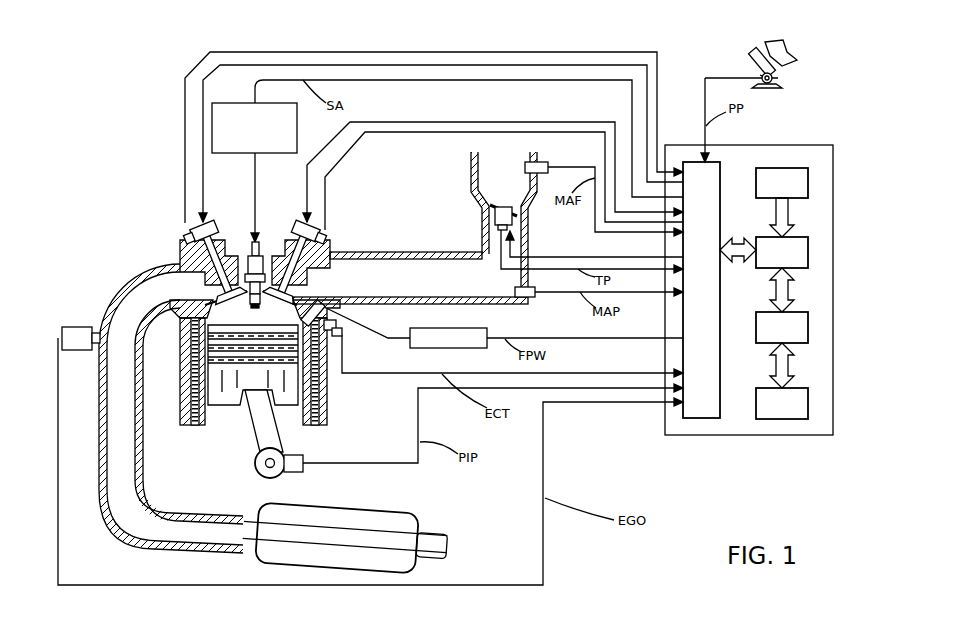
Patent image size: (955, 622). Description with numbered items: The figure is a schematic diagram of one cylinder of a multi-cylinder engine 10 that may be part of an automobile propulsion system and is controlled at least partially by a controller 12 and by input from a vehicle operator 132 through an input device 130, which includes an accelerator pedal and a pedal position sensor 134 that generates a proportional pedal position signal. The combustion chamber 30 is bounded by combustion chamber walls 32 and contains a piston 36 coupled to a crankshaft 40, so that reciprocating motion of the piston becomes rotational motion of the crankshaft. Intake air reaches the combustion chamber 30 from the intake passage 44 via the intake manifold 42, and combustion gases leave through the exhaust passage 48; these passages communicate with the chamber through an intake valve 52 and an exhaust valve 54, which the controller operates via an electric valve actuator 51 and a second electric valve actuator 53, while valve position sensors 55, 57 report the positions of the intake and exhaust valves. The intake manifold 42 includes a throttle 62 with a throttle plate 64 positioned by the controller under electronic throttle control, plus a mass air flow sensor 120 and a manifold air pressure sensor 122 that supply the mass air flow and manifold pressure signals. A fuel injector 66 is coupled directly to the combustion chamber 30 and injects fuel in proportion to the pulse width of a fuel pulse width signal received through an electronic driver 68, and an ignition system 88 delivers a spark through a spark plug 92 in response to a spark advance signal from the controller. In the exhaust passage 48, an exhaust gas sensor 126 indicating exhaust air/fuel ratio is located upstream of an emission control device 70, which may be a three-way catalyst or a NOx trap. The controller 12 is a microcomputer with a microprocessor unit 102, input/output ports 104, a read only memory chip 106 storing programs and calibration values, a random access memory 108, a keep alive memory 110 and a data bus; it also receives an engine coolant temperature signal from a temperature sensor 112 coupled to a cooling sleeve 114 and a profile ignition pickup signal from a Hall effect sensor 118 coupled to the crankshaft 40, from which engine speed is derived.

The engine 10 is at (128, 203).
The controller 12 is at (833, 146).
The combustion chamber 30 is at (195, 390).
The combustion chamber walls 32 is at (208, 428).
The piston 36 is at (242, 396).
The crankshaft 40 is at (258, 476).
The intake manifold 42 is at (495, 186).
The intake passage 44 is at (444, 288).
The exhaust passage 48 is at (144, 296).
The electric valve actuator 51 is at (293, 213).
The intake valve 52 is at (283, 290).
The electric valve actuator 53 is at (215, 214).
The exhaust valve 54 is at (217, 293).
The valve position sensor 55 is at (319, 234).
The valve position sensor 57 is at (193, 226).
The throttle 62 is at (524, 213).
The throttle plate 64 is at (490, 209).
The fuel injector 66 is at (337, 323).
The electronic driver 68 is at (415, 349).
The emission control device 70 is at (387, 512).
The ignition system 88 is at (222, 103).
The spark plug 92 is at (259, 246).
The microprocessor unit 102 is at (808, 250).
The input/output ports 104 is at (722, 165).
The read only memory chip 106 is at (808, 181).
The random access memory 108 is at (808, 325).
The keep alive memory 110 is at (808, 400).
The temperature sensor 112 is at (340, 338).
The cooling sleeve 114 is at (317, 385).
The Hall effect sensor 118 is at (302, 474).
The mass air flow sensor 120 is at (541, 163).
The manifold air pressure sensor 122 is at (534, 300).
The exhaust gas sensor 126 is at (62, 334).
The input device 130 is at (752, 60).
The vehicle operator 132 is at (790, 52).
The pedal position sensor 134 is at (778, 80).